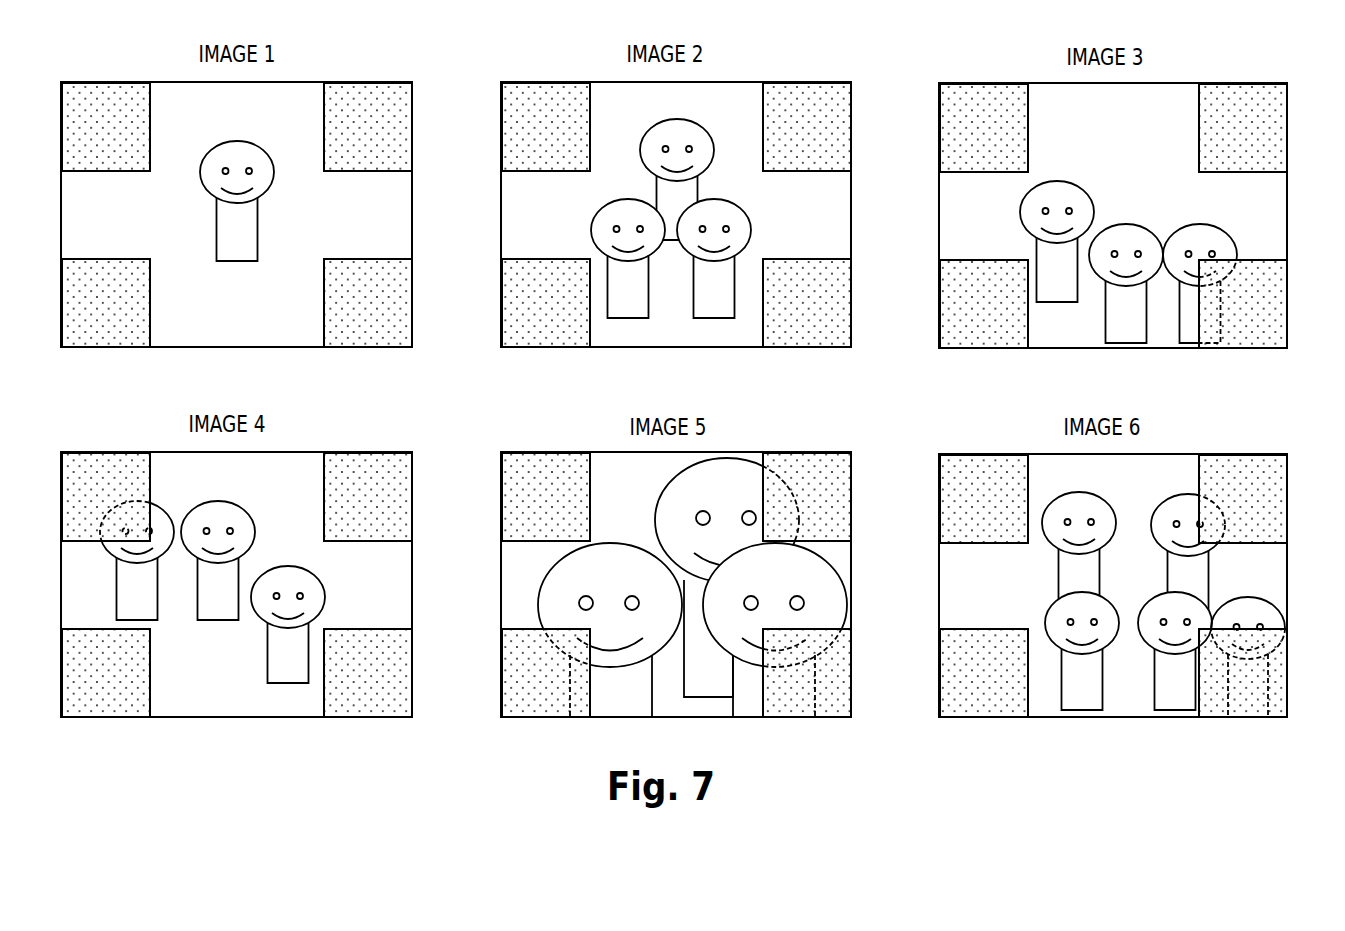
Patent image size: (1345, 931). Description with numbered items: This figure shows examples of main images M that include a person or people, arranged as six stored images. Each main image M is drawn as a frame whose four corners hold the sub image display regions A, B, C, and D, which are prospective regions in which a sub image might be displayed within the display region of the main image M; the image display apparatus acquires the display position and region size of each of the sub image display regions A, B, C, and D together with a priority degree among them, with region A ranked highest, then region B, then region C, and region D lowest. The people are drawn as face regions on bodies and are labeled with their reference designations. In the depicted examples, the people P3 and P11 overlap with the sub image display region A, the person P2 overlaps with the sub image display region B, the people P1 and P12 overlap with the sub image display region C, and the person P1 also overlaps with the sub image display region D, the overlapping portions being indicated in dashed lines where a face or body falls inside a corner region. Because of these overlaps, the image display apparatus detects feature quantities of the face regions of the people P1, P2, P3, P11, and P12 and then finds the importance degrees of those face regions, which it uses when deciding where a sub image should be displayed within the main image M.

The person P1 is at (657, 507).
The person P2 is at (672, 458).
The person P3 is at (1180, 210).
The person P11 is at (837, 565).
The person P12 is at (1153, 512).
The main image M is at (411, 214).
The sub image display region A is at (805, 488).
The sub image display region B is at (545, 488).
The sub image display region C is at (805, 313).
The sub image display region D is at (545, 313).